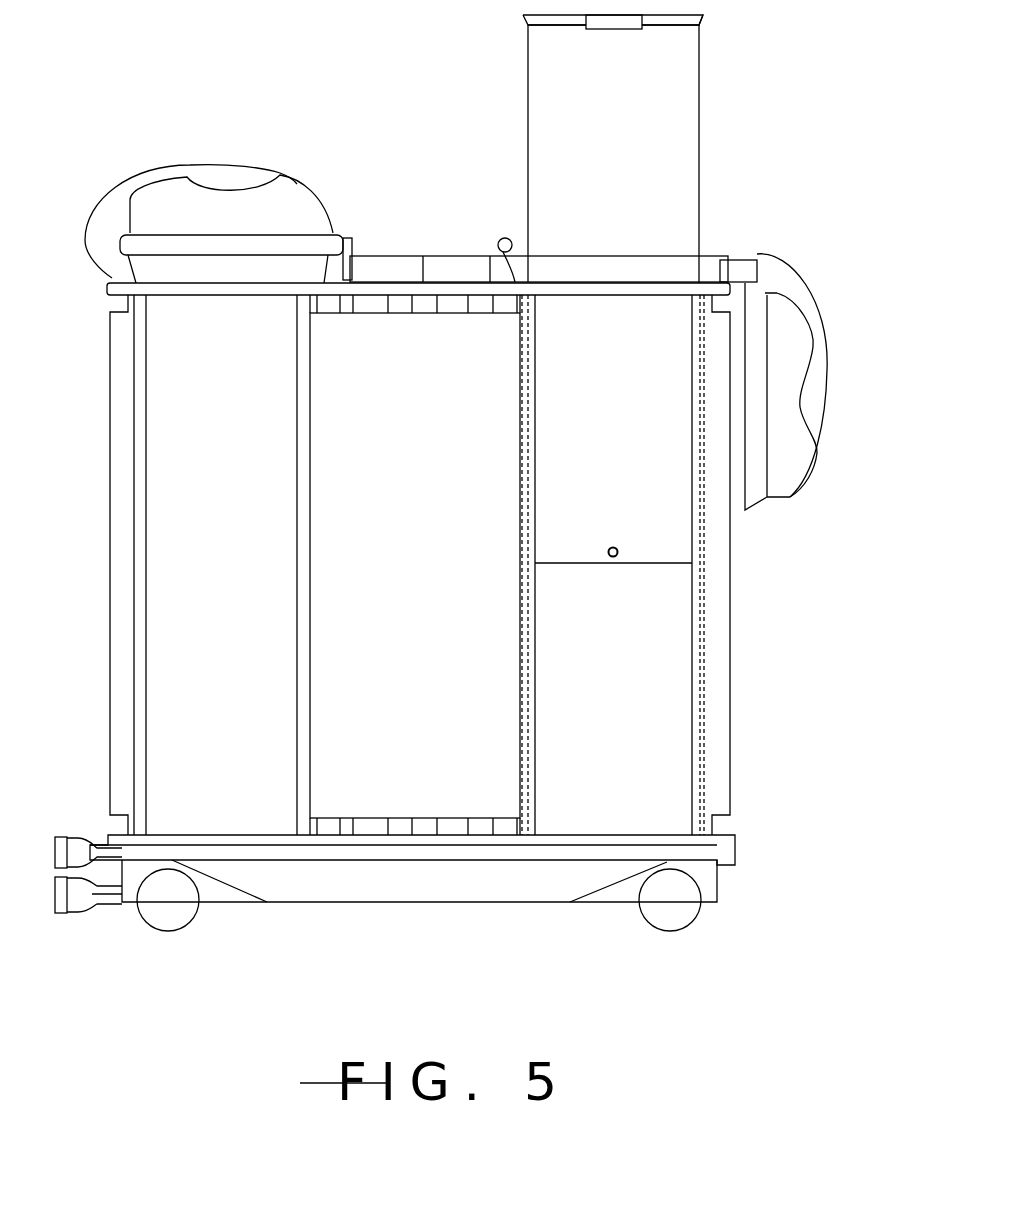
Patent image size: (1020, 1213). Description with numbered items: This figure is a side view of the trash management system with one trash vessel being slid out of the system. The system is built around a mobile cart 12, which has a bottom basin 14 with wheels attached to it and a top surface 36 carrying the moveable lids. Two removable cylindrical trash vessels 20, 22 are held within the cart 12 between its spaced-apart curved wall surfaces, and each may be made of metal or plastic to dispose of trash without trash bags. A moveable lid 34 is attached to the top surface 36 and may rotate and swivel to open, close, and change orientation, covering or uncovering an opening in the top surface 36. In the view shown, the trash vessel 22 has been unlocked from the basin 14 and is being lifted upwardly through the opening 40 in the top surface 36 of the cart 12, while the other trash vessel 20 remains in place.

The mobile cart 12 is at (543, 902).
The bottom basin 14 is at (373, 903).
The trash vessel 20 is at (207, 569).
The trash vessel 22 is at (675, 168).
The moveable lid 34 is at (815, 362).
The top surface 36 is at (513, 247).
The opening 40 is at (633, 305).